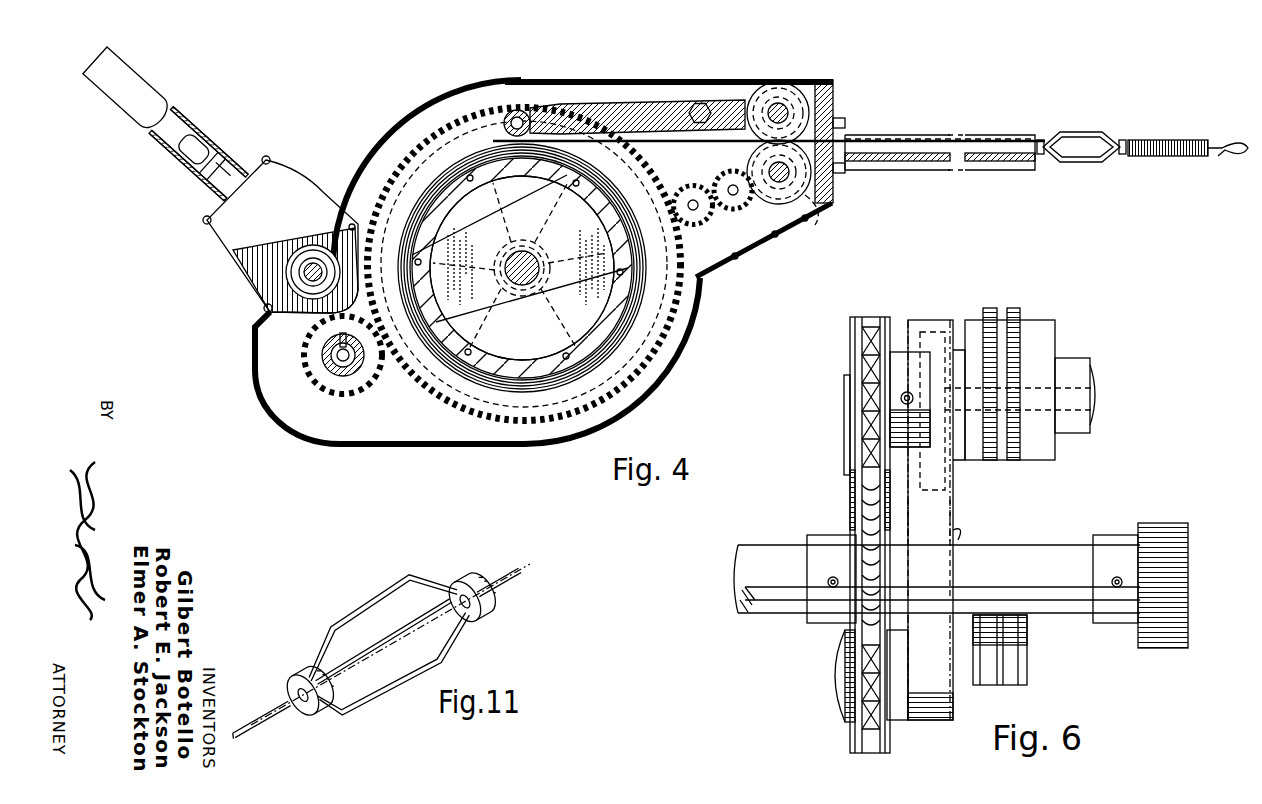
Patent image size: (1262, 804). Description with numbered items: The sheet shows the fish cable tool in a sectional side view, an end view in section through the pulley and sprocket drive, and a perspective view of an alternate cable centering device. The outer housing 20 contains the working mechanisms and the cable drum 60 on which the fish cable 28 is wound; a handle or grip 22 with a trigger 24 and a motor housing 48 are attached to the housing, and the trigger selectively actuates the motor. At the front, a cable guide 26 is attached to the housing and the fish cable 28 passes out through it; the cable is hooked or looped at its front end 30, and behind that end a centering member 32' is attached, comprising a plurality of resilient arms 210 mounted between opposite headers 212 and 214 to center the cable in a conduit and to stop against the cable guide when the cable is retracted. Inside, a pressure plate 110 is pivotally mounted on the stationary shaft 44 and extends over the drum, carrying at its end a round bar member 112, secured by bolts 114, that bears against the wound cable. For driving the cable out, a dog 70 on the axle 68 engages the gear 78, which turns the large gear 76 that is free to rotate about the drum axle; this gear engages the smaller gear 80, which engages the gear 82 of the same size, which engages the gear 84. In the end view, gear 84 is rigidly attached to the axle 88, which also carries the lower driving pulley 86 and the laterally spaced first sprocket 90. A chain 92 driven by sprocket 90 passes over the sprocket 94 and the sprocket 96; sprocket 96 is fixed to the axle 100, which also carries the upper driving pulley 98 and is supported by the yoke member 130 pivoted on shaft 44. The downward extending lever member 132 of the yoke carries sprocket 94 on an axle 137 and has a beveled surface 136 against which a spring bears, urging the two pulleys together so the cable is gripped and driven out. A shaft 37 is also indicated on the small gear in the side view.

In FIG. 4, the outer housing 20 is at (585, 80).
In FIG. 4, the handle or grip 22 is at (160, 78).
In FIG. 4, the trigger 24 is at (212, 158).
In FIG. 4, the cable guide 26 is at (920, 135).
In FIG. 4, the fish cable 28 is at (640, 144).
In FIG. 6, the fish cable 28 is at (1020, 508).
In FIG. 11, the fish cable 28 is at (524, 550).
In FIG. 4, the front end 30 is at (1232, 140).
In FIG. 4, the centering member 32' is at (1081, 124).
In FIG. 11, the centering member 32' is at (389, 628).
In FIG. 4, the shaft 37 is at (337, 355).
In FIG. 4, the stationary shaft 44 is at (702, 102).
In FIG. 4, the motor housing 48 is at (312, 178).
In FIG. 4, the cable drum 60 is at (450, 195).
In FIG. 4, the axle 68 is at (322, 365).
In FIG. 4, the dog 70 is at (340, 338).
In FIG. 4, the large gear 76 is at (432, 402).
In FIG. 4, the gear 78 is at (322, 392).
In FIG. 4, the smaller gear 80 is at (697, 226).
In FIG. 4, the gear 82 is at (760, 248).
In FIG. 4, the gear 84 is at (812, 226).
In FIG. 6, the gear 84 is at (1155, 522).
In FIG. 4, the lower driving pulley 86 is at (805, 198).
In FIG. 6, the lower driving pulley 86 is at (1030, 662).
In FIG. 4, the axle 88 is at (790, 180).
In FIG. 6, the axle 88 is at (778, 548).
In FIG. 6, the first sprocket 90 is at (845, 530).
In FIG. 6, the chain 92 is at (852, 490).
In FIG. 6, the sprocket 94 is at (846, 732).
In FIG. 6, the sprocket 96 is at (848, 445).
In FIG. 4, the upper driving pulley 98 is at (795, 84).
In FIG. 6, the upper driving pulley 98 is at (1002, 305).
In FIG. 4, the axle 100 is at (790, 113).
In FIG. 6, the axle 100 is at (935, 350).
In FIG. 4, the pressure plate 110 is at (625, 100).
In FIG. 4, the round bar member 112 is at (490, 100).
In FIG. 4, the bolts 114 is at (522, 110).
In FIG. 4, the yoke member 130 is at (758, 94).
In FIG. 6, the yoke member 130 is at (972, 312).
In FIG. 6, the lever member 132 is at (958, 540).
In FIG. 6, the beveled surface 136 is at (955, 708).
In FIG. 6, the axle 137 is at (908, 664).
In FIG. 11, the resilient arms 210 is at (412, 676).
In FIG. 11, the header 212 is at (296, 672).
In FIG. 11, the header 214 is at (468, 578).